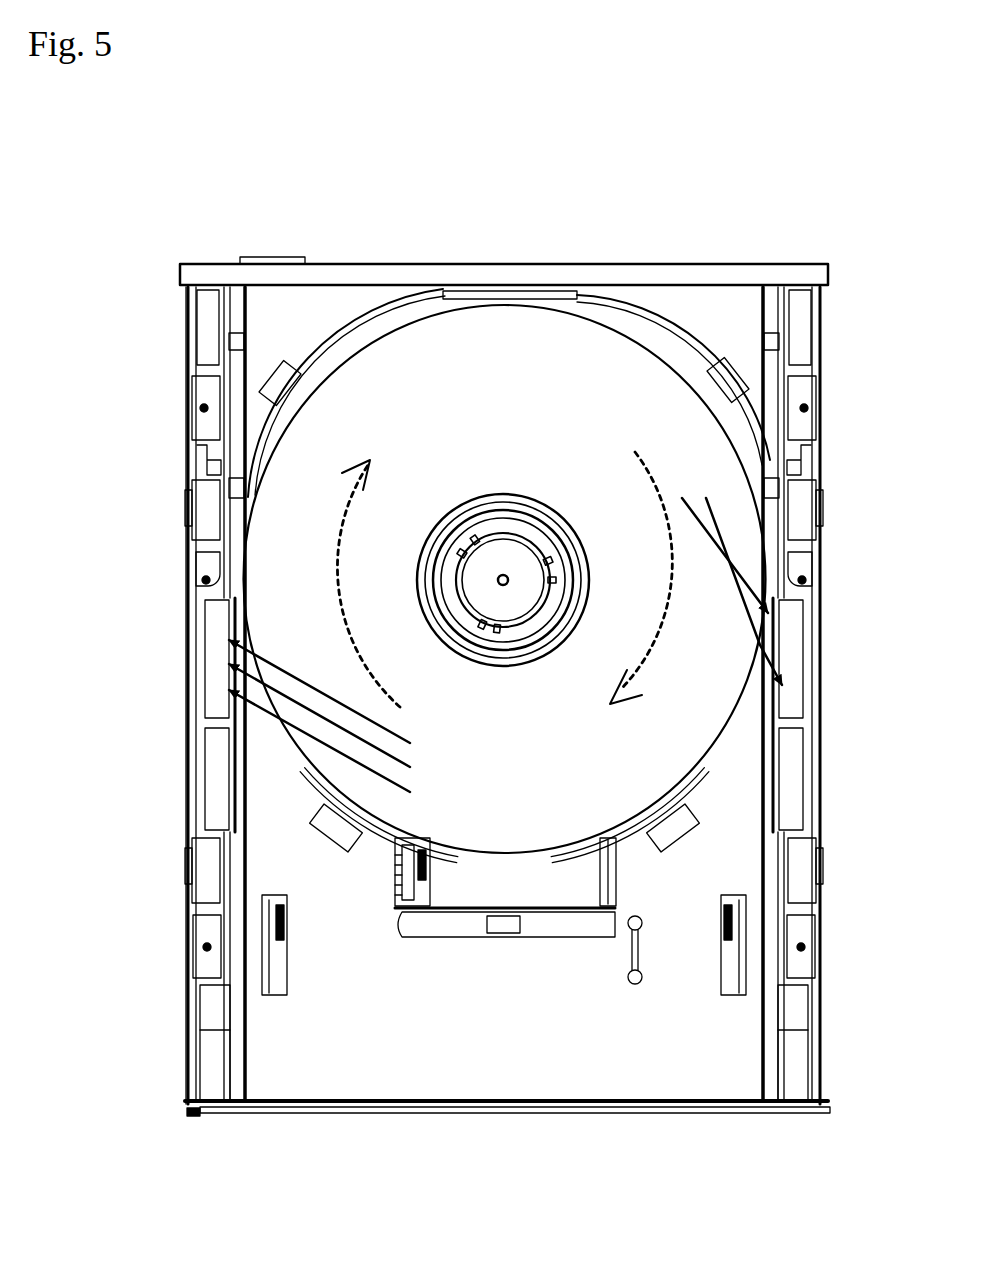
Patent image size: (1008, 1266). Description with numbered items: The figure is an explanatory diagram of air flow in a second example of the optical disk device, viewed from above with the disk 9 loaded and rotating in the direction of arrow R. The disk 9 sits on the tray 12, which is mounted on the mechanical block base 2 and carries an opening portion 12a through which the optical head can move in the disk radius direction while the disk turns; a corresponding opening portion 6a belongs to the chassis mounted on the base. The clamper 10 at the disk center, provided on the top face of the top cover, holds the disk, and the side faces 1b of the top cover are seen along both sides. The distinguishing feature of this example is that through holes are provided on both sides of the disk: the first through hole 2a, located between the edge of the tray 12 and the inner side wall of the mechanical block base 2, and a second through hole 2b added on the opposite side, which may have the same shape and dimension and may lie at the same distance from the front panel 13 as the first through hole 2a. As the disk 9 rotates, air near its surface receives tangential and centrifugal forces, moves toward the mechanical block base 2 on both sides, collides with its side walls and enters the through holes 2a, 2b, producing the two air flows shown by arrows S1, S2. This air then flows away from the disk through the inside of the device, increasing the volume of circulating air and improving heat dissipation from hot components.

The tray 12 is at (258, 305).
The opening portion 12a is at (600, 858).
The front panel 13 is at (464, 285).
The disk 9 is at (538, 370).
The clamper 10 is at (518, 565).
The side face 1b is at (190, 630).
The mechanical block base 2 is at (200, 768).
The first through hole 2a is at (795, 713).
The second through hole 2b is at (213, 683).
The opening portion 6a is at (400, 903).
The arrow R is at (343, 562).
The arrow S1 is at (287, 661).
The arrow S2 is at (740, 612).